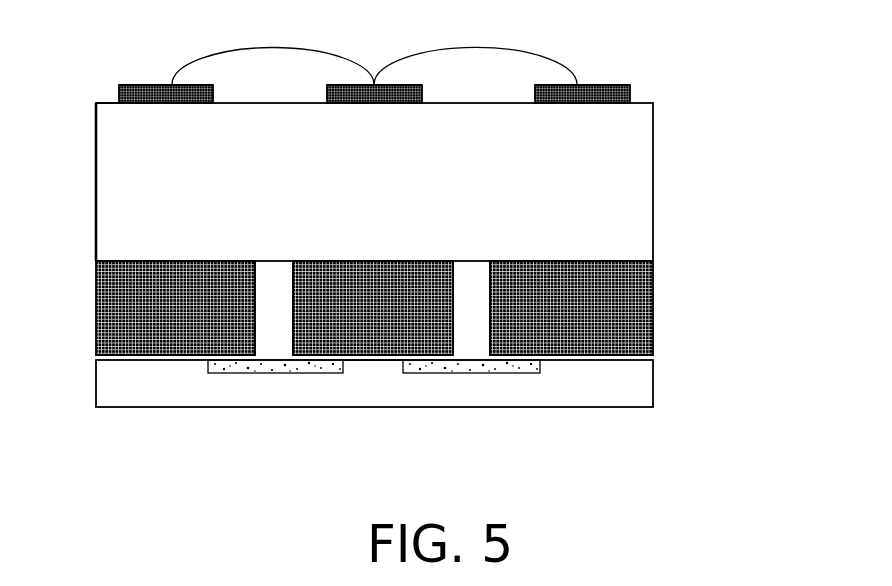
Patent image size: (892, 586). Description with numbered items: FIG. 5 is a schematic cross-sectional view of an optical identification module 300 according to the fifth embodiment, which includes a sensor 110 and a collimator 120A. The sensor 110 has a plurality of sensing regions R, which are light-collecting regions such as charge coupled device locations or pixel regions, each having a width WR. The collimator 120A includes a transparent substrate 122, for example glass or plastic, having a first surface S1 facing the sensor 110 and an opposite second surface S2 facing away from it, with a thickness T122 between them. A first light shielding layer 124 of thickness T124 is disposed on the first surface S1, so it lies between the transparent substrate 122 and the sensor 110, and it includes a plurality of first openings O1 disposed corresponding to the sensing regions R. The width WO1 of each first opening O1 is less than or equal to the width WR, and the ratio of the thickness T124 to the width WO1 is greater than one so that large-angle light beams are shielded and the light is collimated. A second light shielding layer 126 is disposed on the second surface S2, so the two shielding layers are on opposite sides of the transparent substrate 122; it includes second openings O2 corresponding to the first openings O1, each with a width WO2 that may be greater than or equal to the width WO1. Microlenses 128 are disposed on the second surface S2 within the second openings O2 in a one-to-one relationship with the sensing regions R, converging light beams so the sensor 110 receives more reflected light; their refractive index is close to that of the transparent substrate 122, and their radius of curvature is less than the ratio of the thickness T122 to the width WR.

The sensor 110 is at (409, 421).
The collimator 120A is at (474, 208).
The transparent substrate 122 is at (620, 183).
The first light shielding layer 124 is at (635, 277).
The second light shielding layer 126 is at (632, 97).
The microlenses 128 is at (545, 66).
The optical identification module 300 is at (435, 243).
The first openings O1 is at (274, 293).
The second openings O2 is at (235, 88).
The width of each first opening WO1 is at (293, 261).
The width of each second opening WO2 is at (327, 103).
The thickness of the transparent substrate T122 is at (96, 103).
The thickness of the first light shielding layer T124 is at (96, 355).
The first surface S1 is at (142, 262).
The second surface S2 is at (107, 100).
The width of each sensing region WR is at (343, 373).
The sensing regions R is at (404, 365).